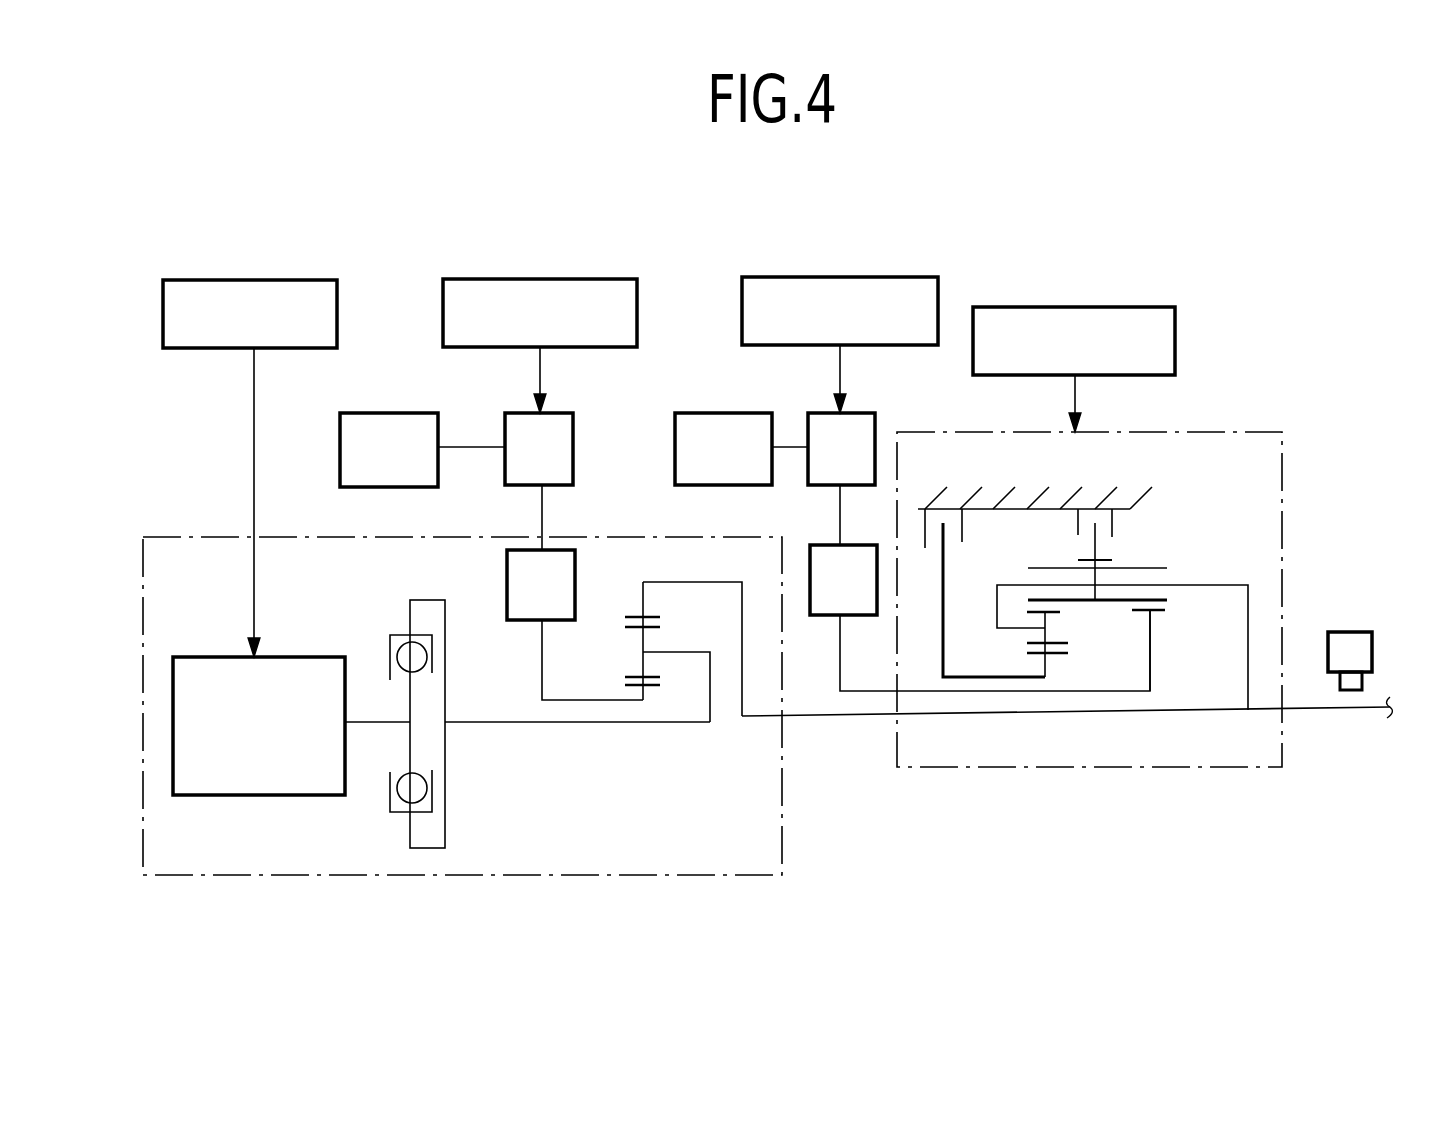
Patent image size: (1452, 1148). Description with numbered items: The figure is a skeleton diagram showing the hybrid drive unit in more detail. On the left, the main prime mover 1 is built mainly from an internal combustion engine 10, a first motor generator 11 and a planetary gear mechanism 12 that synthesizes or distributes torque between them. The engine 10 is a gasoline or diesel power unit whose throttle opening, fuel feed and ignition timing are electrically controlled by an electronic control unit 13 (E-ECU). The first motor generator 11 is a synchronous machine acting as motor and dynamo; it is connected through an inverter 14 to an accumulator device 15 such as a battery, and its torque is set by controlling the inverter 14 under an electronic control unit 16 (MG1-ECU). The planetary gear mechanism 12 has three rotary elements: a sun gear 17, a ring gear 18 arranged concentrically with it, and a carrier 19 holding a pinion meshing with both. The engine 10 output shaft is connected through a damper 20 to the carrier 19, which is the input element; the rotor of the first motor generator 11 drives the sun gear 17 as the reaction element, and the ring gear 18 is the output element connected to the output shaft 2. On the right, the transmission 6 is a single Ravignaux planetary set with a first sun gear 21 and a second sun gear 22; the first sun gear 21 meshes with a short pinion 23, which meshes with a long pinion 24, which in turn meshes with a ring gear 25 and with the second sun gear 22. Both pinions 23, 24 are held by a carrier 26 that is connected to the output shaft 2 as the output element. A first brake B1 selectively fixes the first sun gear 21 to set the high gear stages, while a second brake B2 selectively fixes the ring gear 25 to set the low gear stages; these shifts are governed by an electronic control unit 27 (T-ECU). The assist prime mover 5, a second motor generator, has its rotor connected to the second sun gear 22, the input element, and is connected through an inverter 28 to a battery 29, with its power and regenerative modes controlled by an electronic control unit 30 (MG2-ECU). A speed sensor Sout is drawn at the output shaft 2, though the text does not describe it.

The main prime mover 1 is at (673, 875).
The output shaft 2 is at (1312, 708).
The assist prime mover 5 is at (822, 615).
The transmission 6 is at (1120, 578).
The internal combustion engine 10 is at (300, 795).
The first motor generator 11 is at (507, 578).
The planetary gear mechanism 12 is at (659, 693).
The electronic control unit (E-ECU) 13 is at (315, 280).
The inverter 14 is at (590, 398).
The accumulator device 15 is at (397, 413).
The electronic control unit (MG1-ECU) 16 is at (600, 279).
The sun gear 17 is at (650, 688).
The ring gear 18 is at (630, 612).
The carrier 19 is at (680, 652).
The damper 20 is at (400, 812).
The first sun gear 21 is at (1060, 656).
The second sun gear 22 is at (1157, 612).
The short pinion 23 is at (1065, 645).
The long pinion 24 is at (1032, 568).
The ring gear 25 is at (1110, 558).
The carrier 26 is at (1220, 585).
The electronic control unit (T-ECU) 27 is at (1150, 307).
The inverter 28 is at (892, 398).
The battery 29 is at (727, 413).
The electronic control unit (MG2-ECU) 30 is at (905, 277).
The first brake B1 is at (952, 505).
The second brake B2 is at (1108, 507).
The output shaft speed sensor Sout is at (1360, 632).